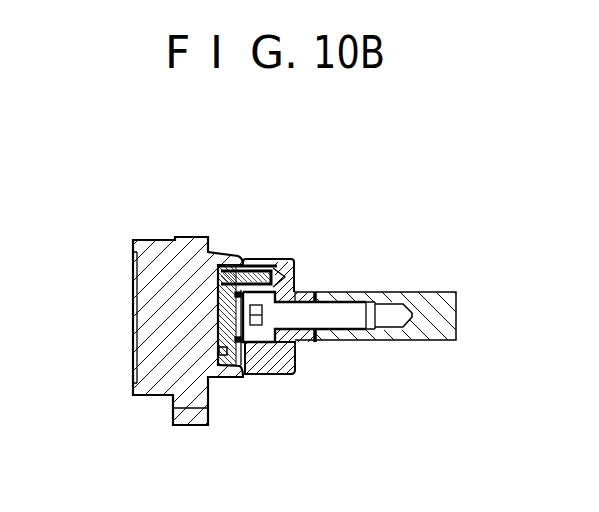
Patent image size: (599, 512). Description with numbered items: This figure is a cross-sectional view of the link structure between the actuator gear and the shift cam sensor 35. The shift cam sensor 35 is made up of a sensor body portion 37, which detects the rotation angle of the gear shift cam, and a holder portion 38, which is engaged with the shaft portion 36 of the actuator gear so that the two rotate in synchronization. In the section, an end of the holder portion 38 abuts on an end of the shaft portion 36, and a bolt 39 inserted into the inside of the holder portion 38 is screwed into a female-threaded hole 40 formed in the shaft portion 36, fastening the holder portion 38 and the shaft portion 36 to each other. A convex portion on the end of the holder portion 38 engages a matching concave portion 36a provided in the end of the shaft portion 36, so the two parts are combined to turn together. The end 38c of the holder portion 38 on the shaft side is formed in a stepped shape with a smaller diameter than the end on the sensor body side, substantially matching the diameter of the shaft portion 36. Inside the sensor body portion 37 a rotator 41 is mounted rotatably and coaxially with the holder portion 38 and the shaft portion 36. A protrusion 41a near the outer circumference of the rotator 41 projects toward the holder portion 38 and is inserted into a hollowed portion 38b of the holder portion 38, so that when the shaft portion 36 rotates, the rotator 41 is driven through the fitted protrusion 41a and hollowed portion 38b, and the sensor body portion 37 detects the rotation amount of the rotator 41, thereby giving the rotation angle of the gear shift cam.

The shift cam sensor 35 is at (142, 423).
The shaft portion 36 is at (433, 292).
The concave portion 36a is at (320, 292).
The sensor body portion 37 is at (157, 238).
The holder portion 38 is at (283, 378).
The hollowed portion 38b is at (274, 259).
The end of the holder portion 38c is at (308, 348).
The bolt 39 is at (353, 323).
The hole 40 is at (388, 307).
The rotator 41 is at (227, 378).
The protrusion 41a is at (252, 258).